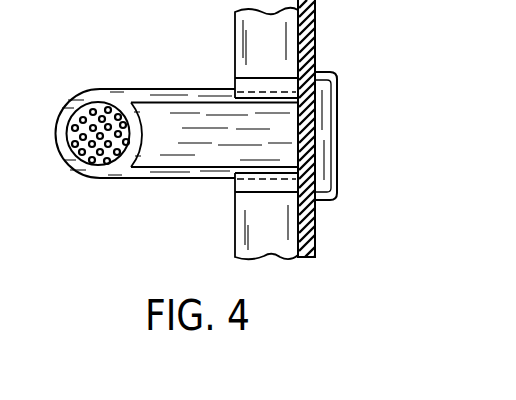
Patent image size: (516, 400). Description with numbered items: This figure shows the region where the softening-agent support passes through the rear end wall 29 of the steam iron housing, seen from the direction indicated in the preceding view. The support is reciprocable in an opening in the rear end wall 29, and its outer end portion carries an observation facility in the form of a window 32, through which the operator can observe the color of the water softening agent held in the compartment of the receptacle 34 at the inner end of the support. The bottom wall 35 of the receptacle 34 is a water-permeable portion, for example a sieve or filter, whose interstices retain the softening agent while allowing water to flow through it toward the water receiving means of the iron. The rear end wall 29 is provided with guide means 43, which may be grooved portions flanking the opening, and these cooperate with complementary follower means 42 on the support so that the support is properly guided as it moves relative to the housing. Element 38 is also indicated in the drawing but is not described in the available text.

The rear end wall 29 is at (318, 30).
The window 32 is at (339, 137).
The receptacle 34 is at (57, 152).
The bottom wall 35 is at (95, 113).
The housing 38 is at (0, 28).
The follower means 42 is at (178, 87).
The guide means 43 is at (272, 96).